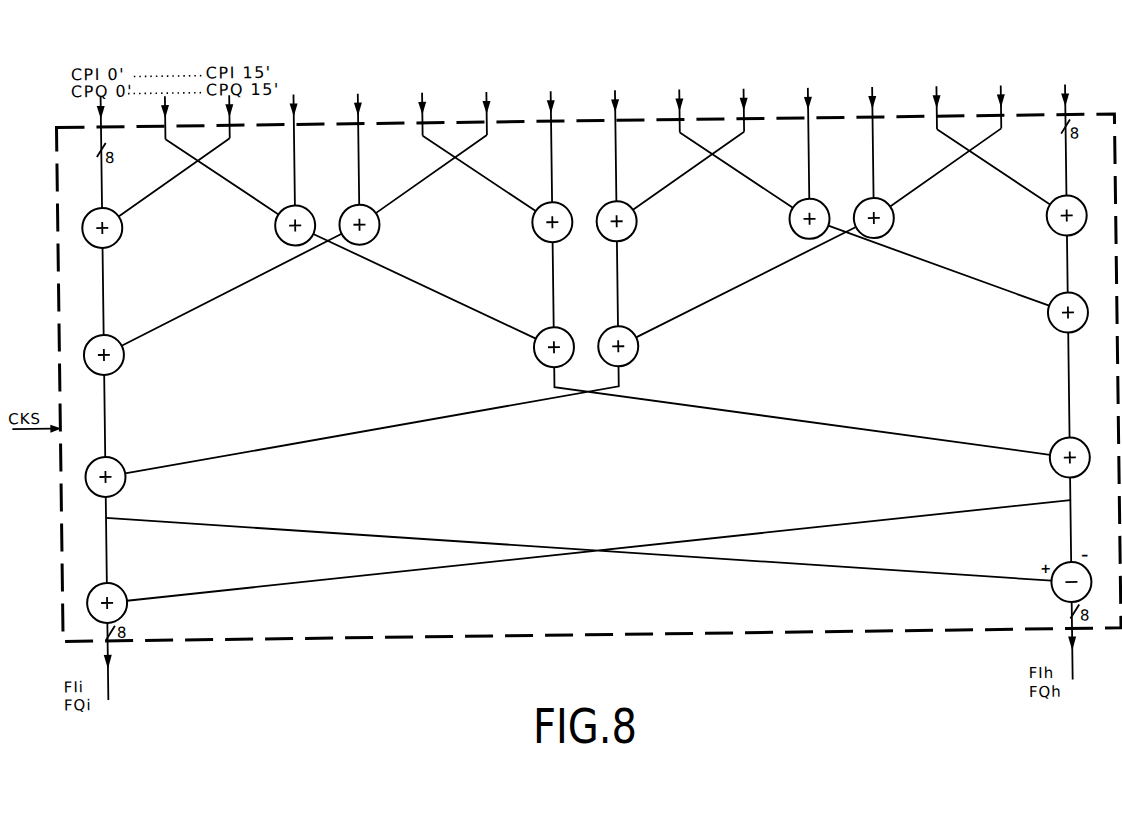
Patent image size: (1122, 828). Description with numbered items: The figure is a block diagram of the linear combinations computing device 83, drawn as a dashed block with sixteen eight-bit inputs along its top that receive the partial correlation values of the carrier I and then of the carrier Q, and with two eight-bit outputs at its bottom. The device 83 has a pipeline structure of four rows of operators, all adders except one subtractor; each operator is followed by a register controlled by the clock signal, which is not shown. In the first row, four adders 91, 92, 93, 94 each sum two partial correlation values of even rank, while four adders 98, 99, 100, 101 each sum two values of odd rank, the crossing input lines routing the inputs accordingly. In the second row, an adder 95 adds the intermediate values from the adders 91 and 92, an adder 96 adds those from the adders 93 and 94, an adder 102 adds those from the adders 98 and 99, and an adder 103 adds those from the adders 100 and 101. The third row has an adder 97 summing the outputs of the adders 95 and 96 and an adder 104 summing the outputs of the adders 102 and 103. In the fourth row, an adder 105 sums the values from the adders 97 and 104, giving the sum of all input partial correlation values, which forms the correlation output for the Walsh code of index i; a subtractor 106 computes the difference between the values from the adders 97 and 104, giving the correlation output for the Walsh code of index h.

The linear combinations computing device 83 is at (760, 641).
The adder 91 is at (124, 234).
The adder 92 is at (381, 234).
The adder 93 is at (638, 234).
The adder 94 is at (895, 234).
The adder 95 is at (124, 361).
The adder 96 is at (638, 360).
The adder 97 is at (124, 483).
The adder 98 is at (278, 236).
The adder 99 is at (535, 233).
The adder 100 is at (793, 233).
The adder 101 is at (1050, 231).
The adder 102 is at (535, 358).
The adder 103 is at (1057, 342).
The adder 104 is at (1055, 486).
The adder 105 is at (119, 587).
The subtractor 106 is at (1052, 607).